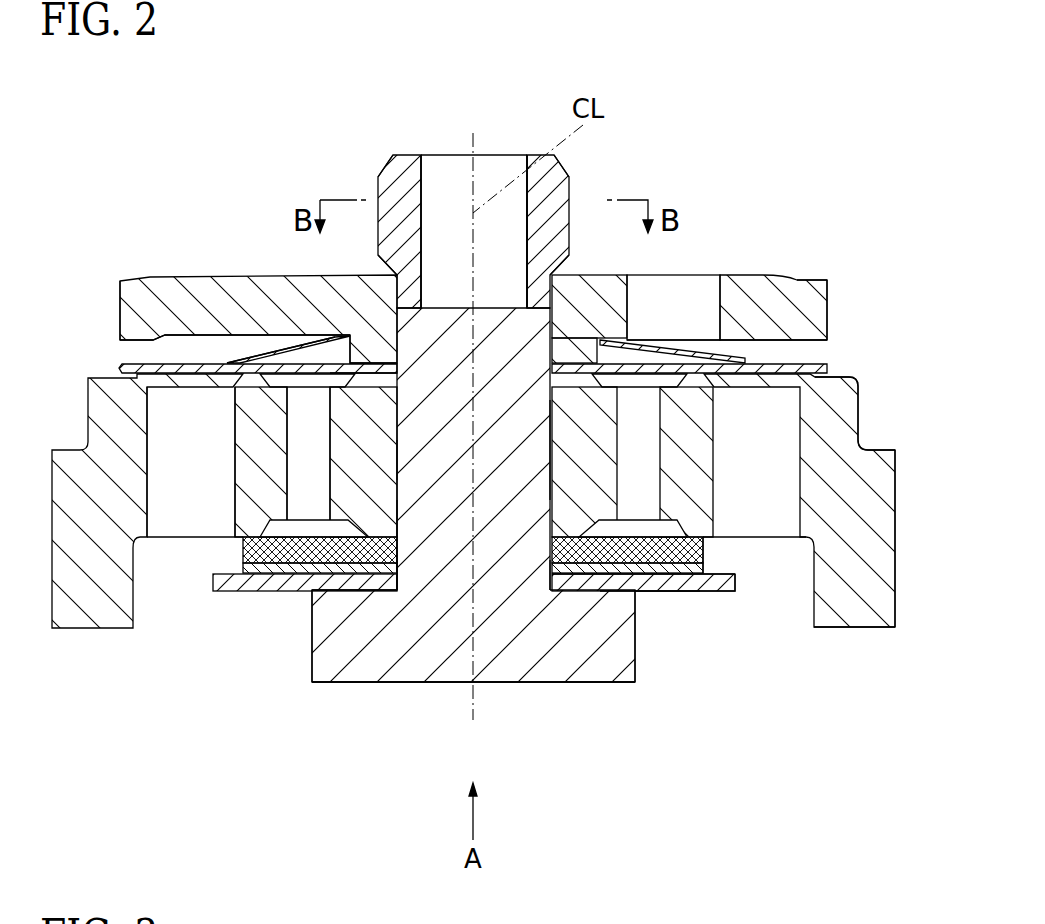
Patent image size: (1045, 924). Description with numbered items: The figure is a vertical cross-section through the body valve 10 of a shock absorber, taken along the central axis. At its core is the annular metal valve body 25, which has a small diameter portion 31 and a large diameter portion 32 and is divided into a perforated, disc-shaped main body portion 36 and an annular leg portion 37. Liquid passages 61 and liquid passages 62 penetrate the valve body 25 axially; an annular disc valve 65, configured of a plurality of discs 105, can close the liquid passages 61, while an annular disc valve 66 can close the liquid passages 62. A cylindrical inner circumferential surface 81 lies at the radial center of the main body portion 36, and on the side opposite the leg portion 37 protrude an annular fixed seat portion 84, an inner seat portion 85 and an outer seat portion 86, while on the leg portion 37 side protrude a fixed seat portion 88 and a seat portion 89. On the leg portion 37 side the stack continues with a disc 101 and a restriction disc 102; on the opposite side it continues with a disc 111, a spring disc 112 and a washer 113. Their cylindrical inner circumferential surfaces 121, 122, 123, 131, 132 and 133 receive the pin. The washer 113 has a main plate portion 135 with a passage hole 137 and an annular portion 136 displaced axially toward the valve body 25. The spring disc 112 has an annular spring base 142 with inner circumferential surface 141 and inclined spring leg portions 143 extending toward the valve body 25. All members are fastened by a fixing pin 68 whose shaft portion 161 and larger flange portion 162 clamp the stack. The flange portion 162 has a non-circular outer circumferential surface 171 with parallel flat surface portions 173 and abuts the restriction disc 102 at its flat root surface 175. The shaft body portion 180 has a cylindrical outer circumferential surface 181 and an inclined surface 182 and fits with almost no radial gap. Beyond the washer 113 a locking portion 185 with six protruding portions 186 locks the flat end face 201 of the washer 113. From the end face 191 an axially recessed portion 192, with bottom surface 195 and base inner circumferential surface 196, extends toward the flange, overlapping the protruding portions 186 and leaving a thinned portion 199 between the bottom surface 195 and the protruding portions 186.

The body valve 10 is at (832, 174).
The valve body 25 is at (863, 368).
The small diameter portion 31 is at (860, 423).
The large diameter portion 32 is at (896, 543).
The main body portion 36 is at (873, 470).
The leg portion 37 is at (852, 612).
The liquid passages 61 is at (300, 425).
The liquid passages 62 is at (150, 445).
The disc valve 65 is at (257, 580).
The disc valve 66 is at (155, 358).
The fixing pin 68 is at (366, 692).
The inner circumferential surface 81 is at (551, 455).
The fixed seat portion 84 is at (372, 366).
The inner seat portion 85 is at (258, 360).
The outer seat portion 86 is at (125, 368).
The fixed seat portion 88 is at (578, 545).
The seat portion 89 is at (693, 550).
The disc 101 is at (597, 578).
The restriction disc 102 is at (727, 590).
The discs 105 is at (243, 550).
The disc 111 is at (395, 300).
The spring disc 112 is at (690, 334).
The washer 113 is at (832, 275).
The inner circumferential surface 121 is at (400, 555).
The inner circumferential surface 122 is at (397, 570).
The inner circumferential surface 123 is at (530, 587).
The inner circumferential surface 131 is at (467, 306).
The inner circumferential surface 132 is at (445, 306).
The inner circumferential surface 133 is at (378, 207).
The main plate portion 135 is at (180, 287).
The annular portion 136 is at (140, 290).
The passage hole 137 is at (712, 314).
The inner circumferential surface 141 is at (458, 306).
The spring base 142 is at (272, 352).
The spring leg portions 143 is at (195, 358).
The shaft portion 161 is at (493, 532).
The flange portion 162 is at (350, 662).
The outer circumferential surface 171 is at (636, 667).
The flat surface portions 173 is at (312, 630).
The root surface 175 is at (632, 580).
The shaft body portion 180 is at (413, 473).
The outer circumferential surface 181 is at (397, 450).
The inclined surface 182 is at (382, 170).
The locking portion 185 is at (545, 198).
The protruding portions 186 is at (378, 195).
The end face 191 is at (482, 153).
The axially recessed portion 192 is at (527, 178).
The bottom surface 195 is at (520, 306).
The base inner circumferential surface 196 is at (515, 250).
The thinned portion 199 is at (590, 295).
The end face 201 is at (762, 275).